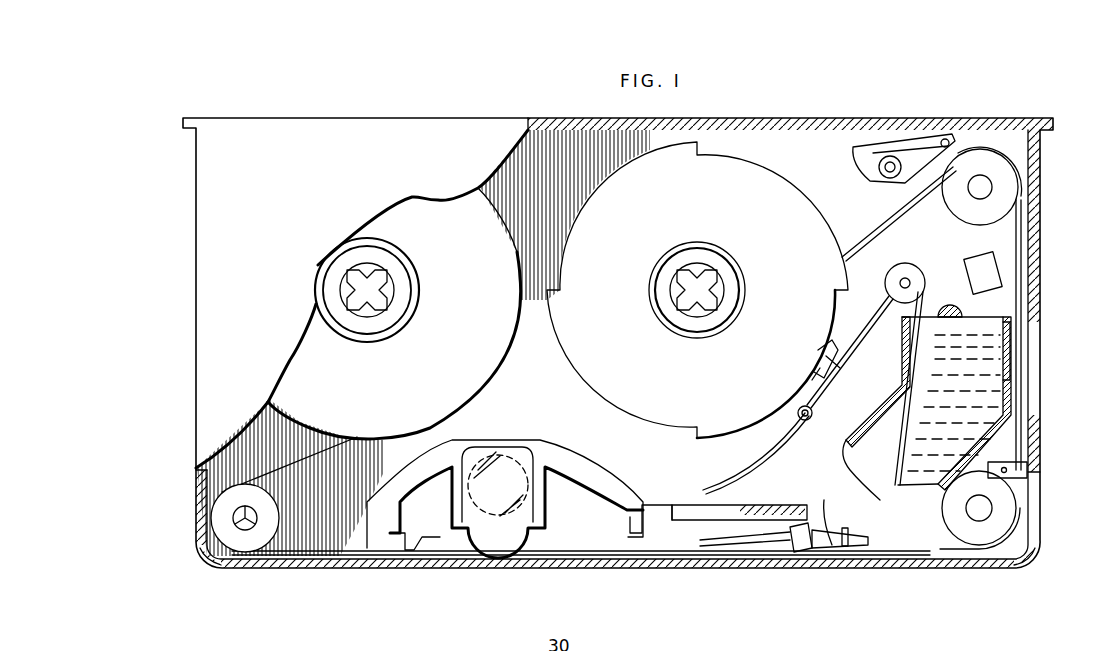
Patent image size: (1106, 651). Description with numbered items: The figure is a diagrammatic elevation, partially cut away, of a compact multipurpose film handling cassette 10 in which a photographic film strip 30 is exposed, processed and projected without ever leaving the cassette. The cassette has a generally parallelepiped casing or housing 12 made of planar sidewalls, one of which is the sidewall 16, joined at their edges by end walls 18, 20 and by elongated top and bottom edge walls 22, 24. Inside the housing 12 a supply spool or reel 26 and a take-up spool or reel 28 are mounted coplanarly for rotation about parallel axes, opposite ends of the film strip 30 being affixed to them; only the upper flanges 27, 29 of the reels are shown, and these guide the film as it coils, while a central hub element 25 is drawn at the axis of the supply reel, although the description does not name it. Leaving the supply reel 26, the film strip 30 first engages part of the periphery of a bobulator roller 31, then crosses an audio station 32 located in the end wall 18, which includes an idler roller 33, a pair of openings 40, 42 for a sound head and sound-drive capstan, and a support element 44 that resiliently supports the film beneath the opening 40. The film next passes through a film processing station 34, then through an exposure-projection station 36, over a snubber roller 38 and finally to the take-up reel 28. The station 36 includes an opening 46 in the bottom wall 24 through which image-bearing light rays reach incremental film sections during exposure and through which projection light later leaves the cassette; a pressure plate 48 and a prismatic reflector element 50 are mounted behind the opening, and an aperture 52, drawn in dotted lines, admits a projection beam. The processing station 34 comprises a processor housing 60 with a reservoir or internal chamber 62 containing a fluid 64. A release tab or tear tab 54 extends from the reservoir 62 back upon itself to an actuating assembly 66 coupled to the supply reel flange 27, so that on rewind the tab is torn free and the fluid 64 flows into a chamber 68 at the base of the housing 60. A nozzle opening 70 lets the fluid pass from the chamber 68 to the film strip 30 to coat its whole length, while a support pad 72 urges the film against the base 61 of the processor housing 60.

The multipurpose film handling cassette 10 is at (473, 103).
The casing or housing 12 is at (316, 135).
The planar sidewall 16 is at (306, 217).
The end wall 18 is at (1042, 218).
The end wall 20 is at (196, 218).
The top edge wall 22 is at (906, 118).
The bottom edge wall 24 is at (384, 286).
The reel hub 25 is at (712, 284).
The supply spool or reel 26 is at (772, 165).
The supply reel flange 27 is at (779, 236).
The take-up spool or reel 28 is at (506, 372).
The take-up reel flange 29 is at (470, 326).
The photographic film strip 30 is at (900, 196).
The bobulator roller 31 is at (986, 173).
The audio station 32 is at (1046, 468).
The idler roller 33 is at (992, 532).
The film processing station 34 is at (882, 380).
The exposure-projection station 36 is at (578, 505).
The snubber roller 38 is at (248, 555).
The opening 40 is at (1039, 360).
The opening 42 is at (1034, 479).
The support element 44 is at (1000, 258).
The opening 46 is at (516, 560).
The pressure plate 48 is at (418, 547).
The prismatic reflector element 50 is at (528, 452).
The aperture 52 is at (478, 456).
The release tab or tear tab 54 is at (877, 300).
The processor housing 60 is at (880, 438).
The base of the processor housing 61 is at (829, 530).
The fluid reservoir or internal chamber 62 is at (950, 312).
The fluid 64 is at (974, 410).
The actuating assembly 66 is at (822, 367).
The chamber 68 is at (846, 430).
The nozzle opening 70 is at (862, 545).
The support pad 72 is at (936, 550).